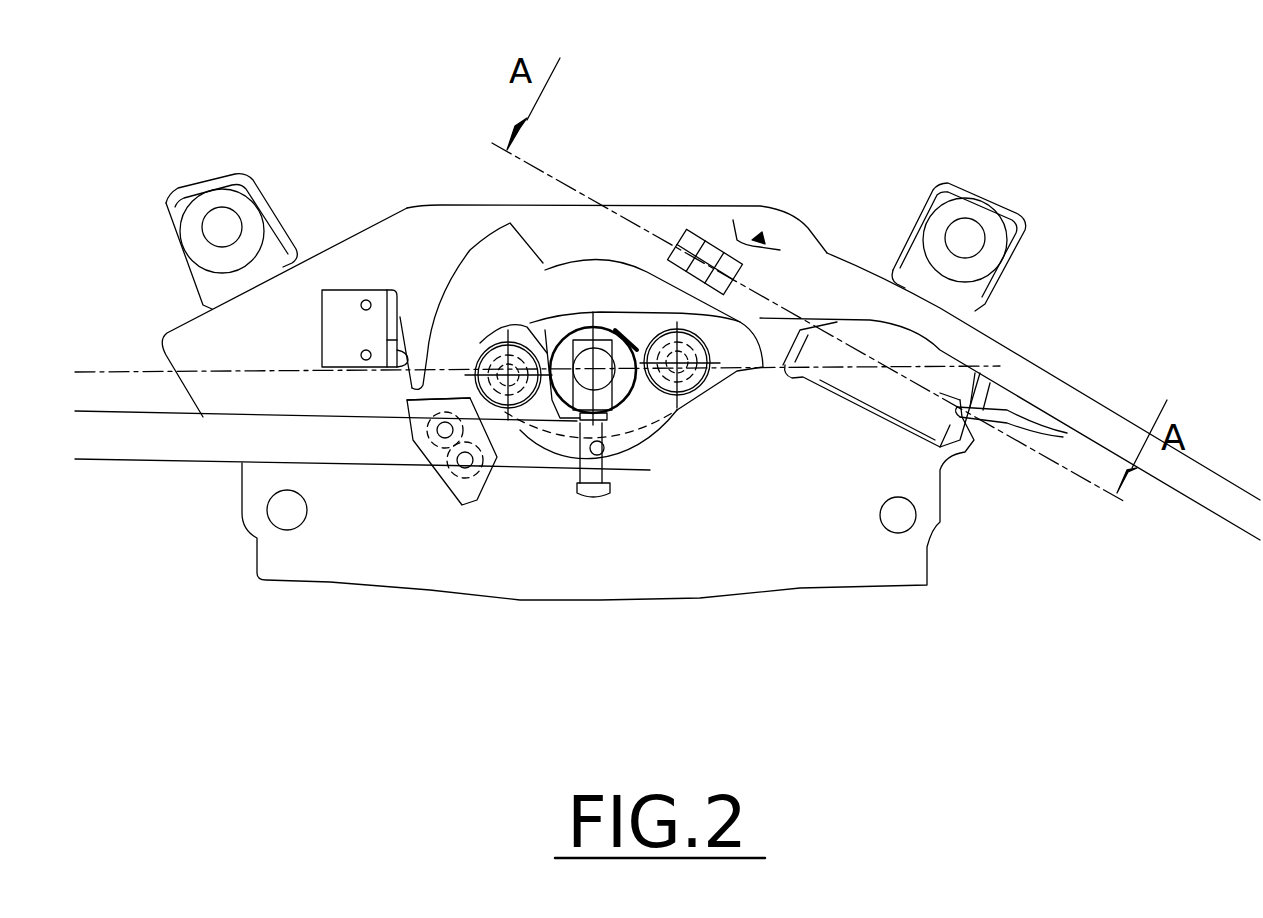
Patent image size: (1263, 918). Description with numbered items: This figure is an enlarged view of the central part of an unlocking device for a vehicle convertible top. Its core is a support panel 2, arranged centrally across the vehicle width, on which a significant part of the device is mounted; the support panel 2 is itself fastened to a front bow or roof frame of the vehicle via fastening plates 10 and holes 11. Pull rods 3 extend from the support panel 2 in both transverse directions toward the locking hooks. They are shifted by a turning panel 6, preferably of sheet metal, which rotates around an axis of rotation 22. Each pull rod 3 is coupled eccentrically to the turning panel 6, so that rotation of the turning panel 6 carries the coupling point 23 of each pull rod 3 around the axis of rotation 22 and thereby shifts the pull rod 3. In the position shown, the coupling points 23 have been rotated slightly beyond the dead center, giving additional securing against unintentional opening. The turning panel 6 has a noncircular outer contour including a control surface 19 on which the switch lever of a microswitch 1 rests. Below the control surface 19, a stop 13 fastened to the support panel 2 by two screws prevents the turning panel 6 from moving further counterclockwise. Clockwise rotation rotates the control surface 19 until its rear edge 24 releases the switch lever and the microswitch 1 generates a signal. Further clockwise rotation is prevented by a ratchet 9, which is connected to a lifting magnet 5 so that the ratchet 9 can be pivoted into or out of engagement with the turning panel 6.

The microswitch 1 is at (345, 315).
The support panel 2 is at (830, 566).
The pull rod 3 is at (197, 447).
The lifting magnet 5 is at (918, 395).
The turning panel 6 is at (502, 270).
The ratchet 9 is at (715, 252).
The fastening plate 10 is at (952, 185).
The hole 11 is at (902, 515).
The stop 13 is at (458, 497).
The control surface 19 is at (440, 290).
The axis of rotation 22 is at (593, 375).
The coupling point 23 is at (508, 377).
The edge 24 is at (439, 400).